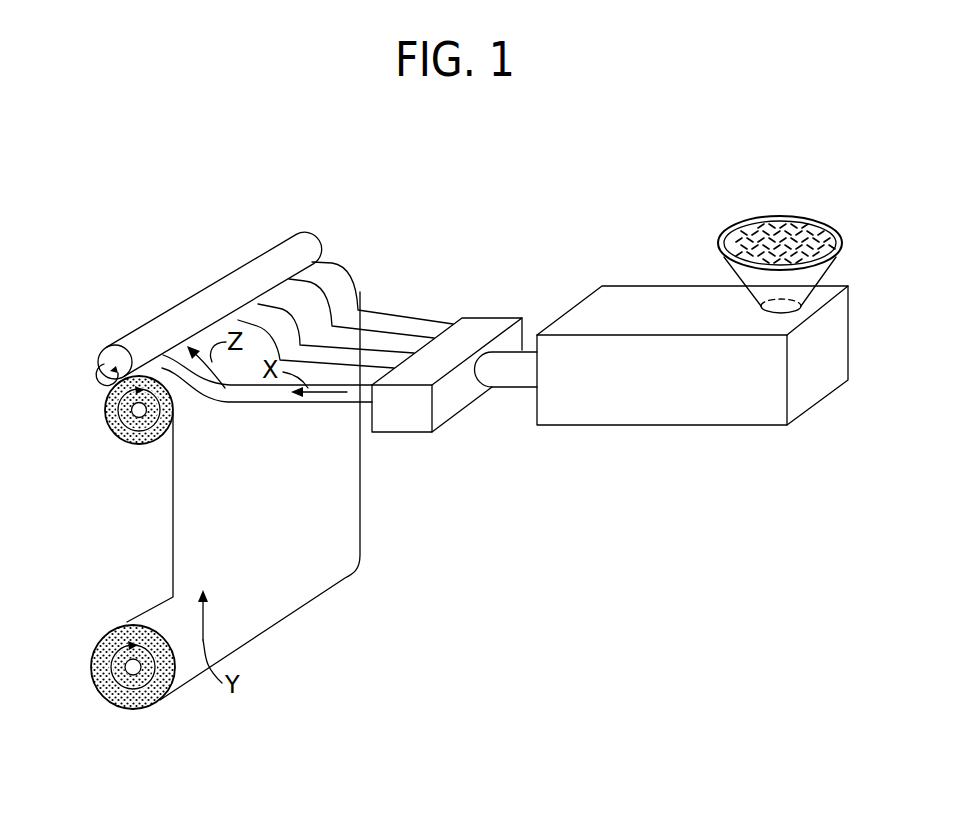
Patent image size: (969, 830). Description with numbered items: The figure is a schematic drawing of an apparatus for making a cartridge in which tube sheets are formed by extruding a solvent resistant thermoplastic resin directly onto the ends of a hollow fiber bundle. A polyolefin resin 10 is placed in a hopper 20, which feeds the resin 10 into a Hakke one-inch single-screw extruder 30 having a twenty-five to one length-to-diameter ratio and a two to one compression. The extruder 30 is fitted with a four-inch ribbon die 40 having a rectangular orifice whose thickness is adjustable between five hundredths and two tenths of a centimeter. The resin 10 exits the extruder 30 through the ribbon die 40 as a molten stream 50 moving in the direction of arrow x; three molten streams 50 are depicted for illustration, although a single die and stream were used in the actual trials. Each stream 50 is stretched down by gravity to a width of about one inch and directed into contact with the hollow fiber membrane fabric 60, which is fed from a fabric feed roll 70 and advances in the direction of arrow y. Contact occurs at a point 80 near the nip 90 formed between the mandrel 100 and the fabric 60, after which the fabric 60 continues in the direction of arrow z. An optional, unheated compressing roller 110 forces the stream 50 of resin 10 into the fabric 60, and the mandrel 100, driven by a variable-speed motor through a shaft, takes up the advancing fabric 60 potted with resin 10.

The polyolefin resin 10 is at (798, 241).
The hopper 20 is at (810, 278).
The extruder 30 is at (738, 413).
The ribbon die 40 is at (417, 425).
The molten stream 50 is at (392, 325).
The hollow fiber membrane fabric 60 is at (263, 608).
The fabric feed roll 70 is at (125, 667).
The point 80 is at (229, 392).
The nip 90 is at (167, 433).
The mandrel 100 is at (135, 412).
The compressing roller 110 is at (100, 352).